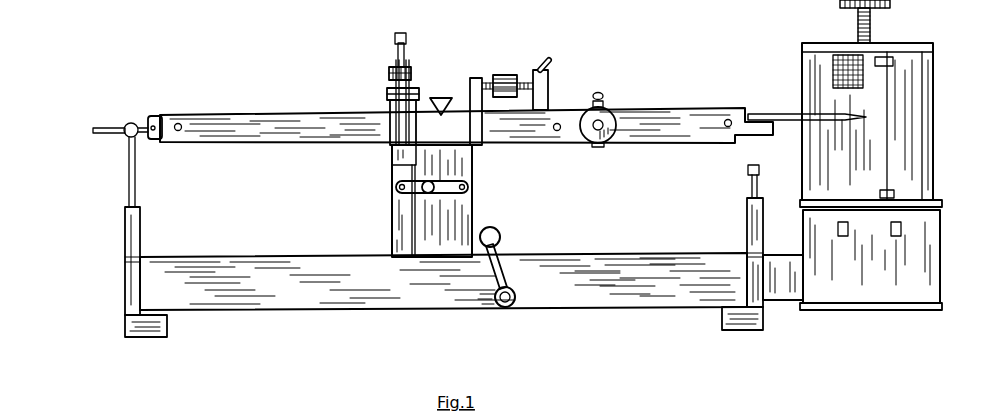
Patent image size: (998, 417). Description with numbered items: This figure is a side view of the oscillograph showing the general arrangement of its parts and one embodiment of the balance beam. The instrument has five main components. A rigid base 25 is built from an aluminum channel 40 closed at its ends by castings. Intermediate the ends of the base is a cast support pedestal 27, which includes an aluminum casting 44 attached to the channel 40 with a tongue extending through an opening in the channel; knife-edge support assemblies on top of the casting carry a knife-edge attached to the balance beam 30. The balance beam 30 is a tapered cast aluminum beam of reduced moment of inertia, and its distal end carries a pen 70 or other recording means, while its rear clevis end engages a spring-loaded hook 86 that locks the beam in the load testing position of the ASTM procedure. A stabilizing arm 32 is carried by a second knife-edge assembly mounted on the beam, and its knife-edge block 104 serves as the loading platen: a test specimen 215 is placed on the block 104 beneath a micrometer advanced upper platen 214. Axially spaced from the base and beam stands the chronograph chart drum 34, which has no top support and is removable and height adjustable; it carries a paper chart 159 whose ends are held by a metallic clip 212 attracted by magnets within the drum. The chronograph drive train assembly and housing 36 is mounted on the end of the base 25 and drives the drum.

The base 25 is at (350, 333).
The support pedestal 27 is at (377, 216).
The balance beam 30 is at (232, 109).
The stabilizing arm 32 is at (377, 180).
The chronograph chart drum 34 is at (951, 128).
The chronograph drive train assembly and housing 36 is at (951, 236).
The aluminum channel 40 is at (584, 255).
The aluminum casting 44 is at (470, 210).
The pen 70 is at (782, 113).
The spring-loaded hook 86 is at (107, 127).
The knife-edge block 104 is at (388, 102).
The paper chart 159 is at (864, 79).
The metallic clip 212 is at (897, 192).
The upper platen 214 is at (388, 72).
The test specimen 215 is at (417, 100).